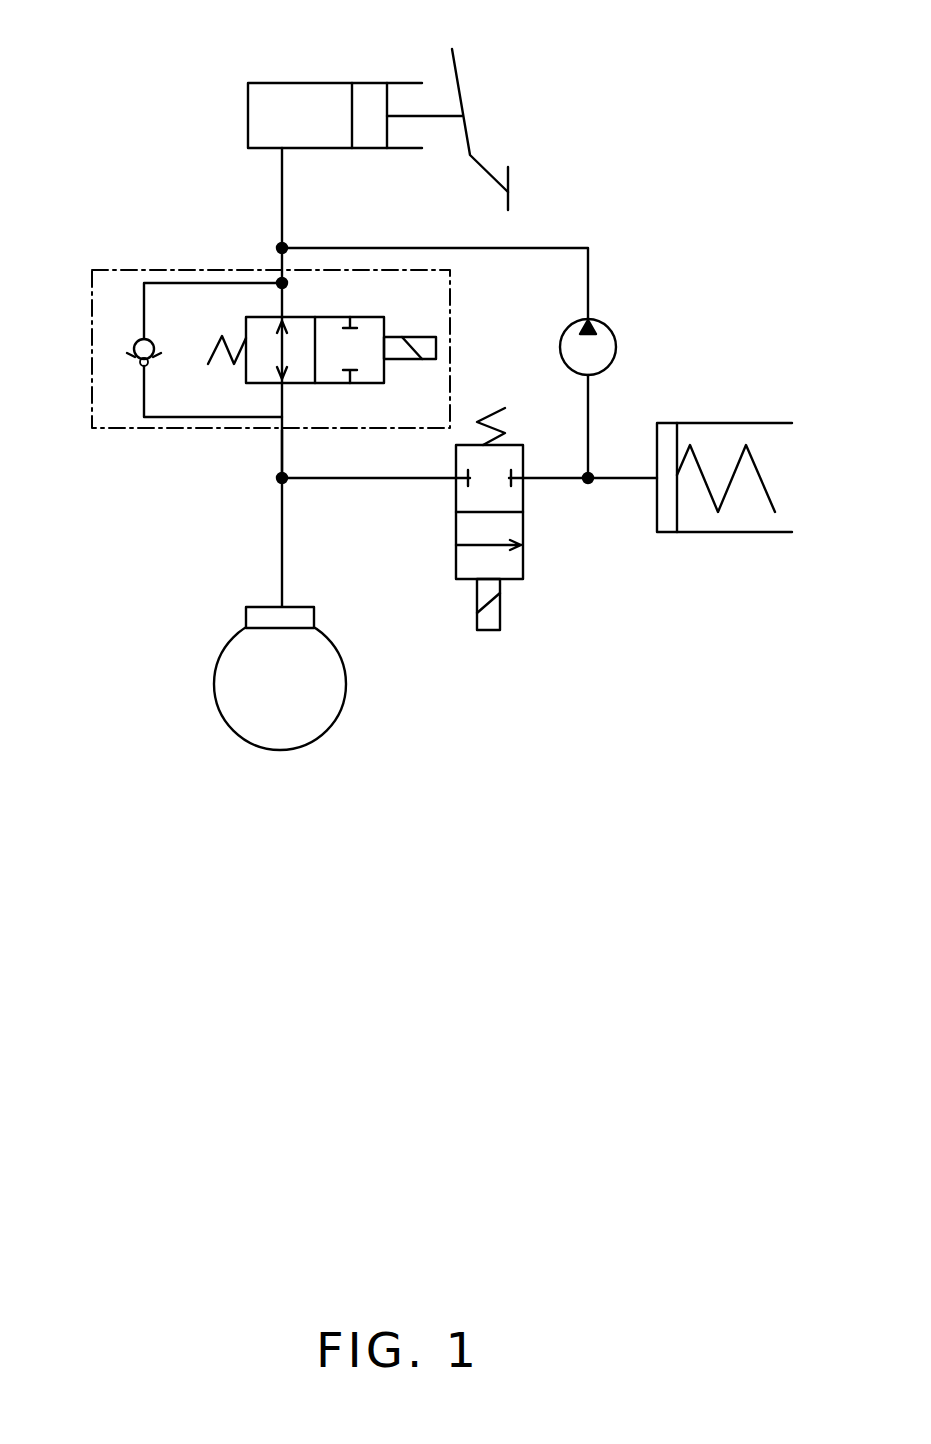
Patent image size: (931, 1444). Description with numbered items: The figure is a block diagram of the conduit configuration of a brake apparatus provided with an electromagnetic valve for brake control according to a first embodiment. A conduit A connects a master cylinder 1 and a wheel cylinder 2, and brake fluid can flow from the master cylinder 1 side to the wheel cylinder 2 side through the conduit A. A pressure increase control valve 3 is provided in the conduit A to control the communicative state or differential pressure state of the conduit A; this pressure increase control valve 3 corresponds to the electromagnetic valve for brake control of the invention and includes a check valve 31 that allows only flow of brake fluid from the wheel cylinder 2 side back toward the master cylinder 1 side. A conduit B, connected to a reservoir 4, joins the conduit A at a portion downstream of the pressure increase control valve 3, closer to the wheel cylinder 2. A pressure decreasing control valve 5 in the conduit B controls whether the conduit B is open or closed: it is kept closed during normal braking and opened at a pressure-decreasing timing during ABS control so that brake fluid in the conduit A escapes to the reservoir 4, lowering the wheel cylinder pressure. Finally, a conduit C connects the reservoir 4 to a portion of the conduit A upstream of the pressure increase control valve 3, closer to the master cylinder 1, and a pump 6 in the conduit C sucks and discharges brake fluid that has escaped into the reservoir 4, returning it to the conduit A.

The master cylinder 1 is at (312, 83).
The wheel cylinder 2 is at (266, 609).
The pressure increase control valve 3 is at (238, 310).
The check valve 31 is at (133, 346).
The reservoir 4 is at (718, 423).
The pressure decreasing control valve 5 is at (525, 530).
The pump 6 is at (605, 318).
The conduit A is at (282, 450).
The conduit B is at (356, 480).
The conduit C is at (566, 247).